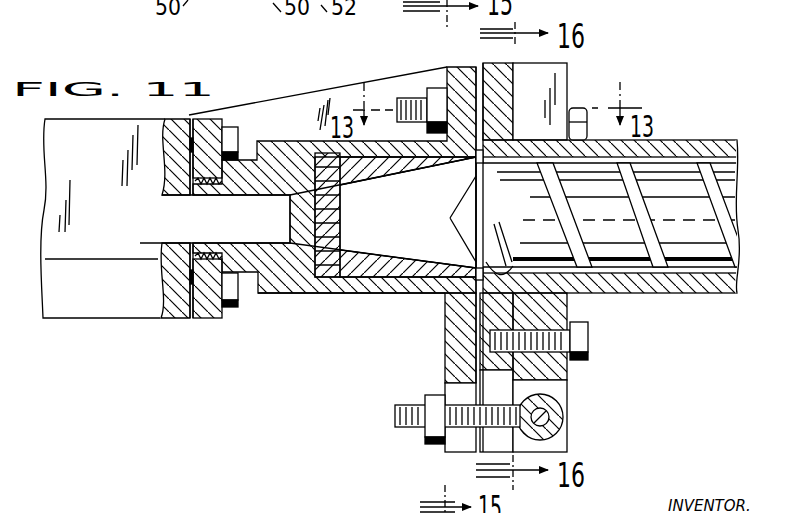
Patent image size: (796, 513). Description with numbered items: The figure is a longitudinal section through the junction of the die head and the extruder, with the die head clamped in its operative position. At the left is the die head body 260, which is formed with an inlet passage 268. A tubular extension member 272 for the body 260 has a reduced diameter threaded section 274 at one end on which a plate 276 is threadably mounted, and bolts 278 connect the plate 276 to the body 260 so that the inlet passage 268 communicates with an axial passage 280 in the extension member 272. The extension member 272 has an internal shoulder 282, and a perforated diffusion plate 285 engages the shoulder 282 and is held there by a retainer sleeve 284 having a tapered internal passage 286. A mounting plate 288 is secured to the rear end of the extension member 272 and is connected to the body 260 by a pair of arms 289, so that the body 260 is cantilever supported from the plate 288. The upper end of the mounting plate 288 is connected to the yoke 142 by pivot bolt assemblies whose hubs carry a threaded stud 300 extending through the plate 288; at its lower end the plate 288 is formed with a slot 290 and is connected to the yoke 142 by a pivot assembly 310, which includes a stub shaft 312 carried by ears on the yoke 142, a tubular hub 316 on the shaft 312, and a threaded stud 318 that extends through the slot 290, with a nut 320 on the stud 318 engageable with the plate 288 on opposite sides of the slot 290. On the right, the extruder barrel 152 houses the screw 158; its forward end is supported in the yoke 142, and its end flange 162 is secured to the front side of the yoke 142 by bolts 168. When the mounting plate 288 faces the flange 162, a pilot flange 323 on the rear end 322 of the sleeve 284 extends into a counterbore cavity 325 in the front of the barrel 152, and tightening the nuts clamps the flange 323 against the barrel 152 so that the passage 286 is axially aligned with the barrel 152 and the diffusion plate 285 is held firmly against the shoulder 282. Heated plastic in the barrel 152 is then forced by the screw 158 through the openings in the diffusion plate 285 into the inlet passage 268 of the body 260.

The yoke 142 is at (556, 378).
The barrel 152 is at (650, 145).
The screw 158 is at (730, 213).
The flange 162 is at (503, 77).
The bolts 168 is at (586, 108).
The body 260 is at (67, 164).
The inlet passage 268 is at (170, 212).
The tubular extension member 272 is at (343, 293).
The reduced diameter threaded section 274 is at (197, 246).
The plate 276 is at (203, 132).
The bolts 278 is at (235, 141).
The axial passage 280 is at (262, 240).
The internal shoulder 282 is at (365, 258).
The retainer sleeve 284 is at (367, 244).
The perforated diffusion plate 285 is at (337, 208).
The tapered internal passage 286 is at (412, 293).
The mounting plate 288 is at (452, 358).
The arms 289 is at (391, 78).
The slot 290 is at (455, 442).
The threaded stud 300 is at (414, 103).
The pivot assembly 310 is at (572, 420).
The stub shaft 312 is at (551, 408).
The tubular hub 316 is at (557, 430).
The threaded stud 318 is at (398, 418).
The nut 320 is at (400, 405).
The rear end 322 is at (487, 263).
The pilot flange 323 is at (506, 257).
The counterbore cavity 325 is at (477, 166).